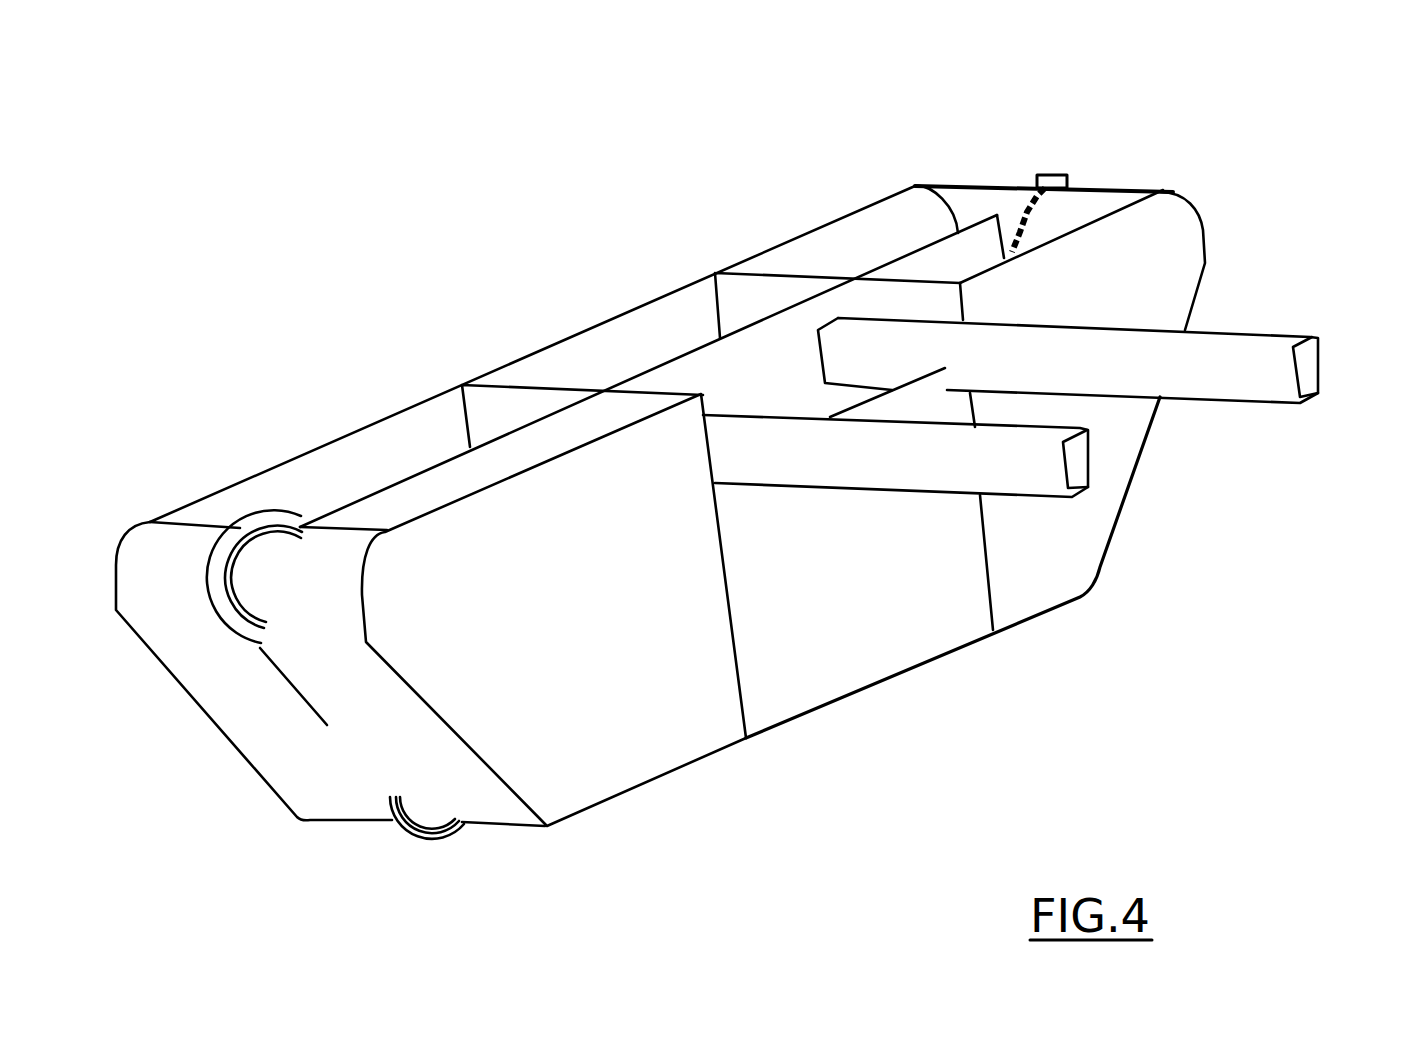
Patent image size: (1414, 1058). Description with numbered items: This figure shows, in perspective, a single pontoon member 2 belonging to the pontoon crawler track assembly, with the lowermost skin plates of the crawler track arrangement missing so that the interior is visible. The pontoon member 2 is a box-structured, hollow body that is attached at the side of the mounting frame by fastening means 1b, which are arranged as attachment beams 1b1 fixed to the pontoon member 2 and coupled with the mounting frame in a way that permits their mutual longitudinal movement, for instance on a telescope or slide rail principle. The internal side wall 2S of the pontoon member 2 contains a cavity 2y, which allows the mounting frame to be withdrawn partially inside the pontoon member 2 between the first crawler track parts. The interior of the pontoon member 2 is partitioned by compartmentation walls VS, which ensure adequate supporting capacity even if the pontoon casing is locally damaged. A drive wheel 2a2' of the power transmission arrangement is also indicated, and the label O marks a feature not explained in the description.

The pontoon member 2 is at (748, 437).
The internal side wall 2S is at (584, 622).
The cavity 2y is at (757, 352).
The drive wheel 2a2' is at (1106, 143).
The openings in top surface O is at (580, 353).
The compartmentation walls VS is at (478, 496).
The fastening means 1b is at (1200, 378).
The attachment beams 1b1 is at (1043, 467).